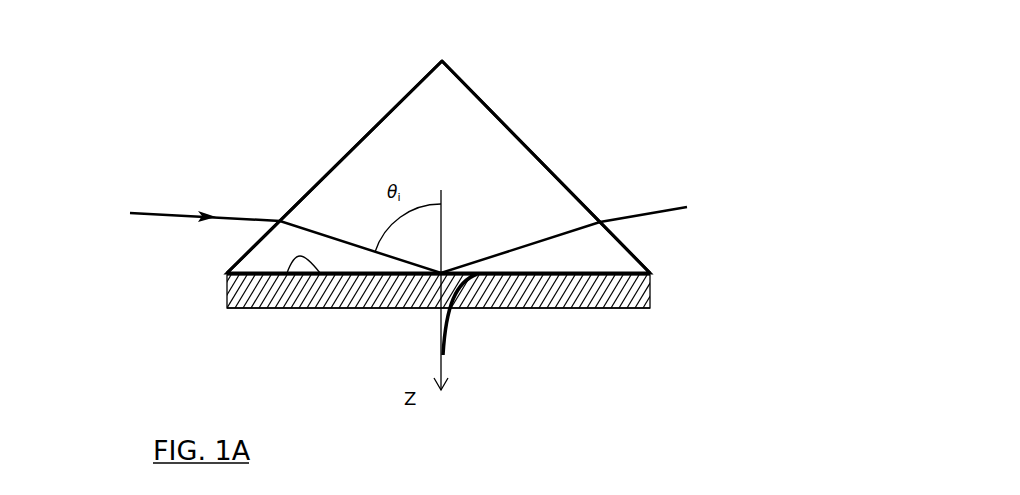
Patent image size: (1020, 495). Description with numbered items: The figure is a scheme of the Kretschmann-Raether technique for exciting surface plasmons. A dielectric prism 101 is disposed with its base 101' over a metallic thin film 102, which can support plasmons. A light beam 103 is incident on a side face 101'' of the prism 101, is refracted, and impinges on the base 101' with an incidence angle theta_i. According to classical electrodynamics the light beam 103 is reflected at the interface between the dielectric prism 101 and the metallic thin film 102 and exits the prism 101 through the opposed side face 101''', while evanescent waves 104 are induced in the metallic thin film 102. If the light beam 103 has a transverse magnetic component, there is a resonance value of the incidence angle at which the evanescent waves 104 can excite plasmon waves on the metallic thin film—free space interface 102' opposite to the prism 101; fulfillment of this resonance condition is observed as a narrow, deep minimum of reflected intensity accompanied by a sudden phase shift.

The dielectric prism 101 is at (438, 161).
The base of the prism 101' is at (438, 304).
The side face of the prism 101'' is at (322, 167).
The opposed side face of the prism 101''' is at (563, 167).
The metallic thin film 102 is at (480, 272).
The metallic thin film—free space interface 102' is at (467, 335).
The light beam 103 is at (377, 211).
The evanescent waves 104 is at (512, 335).